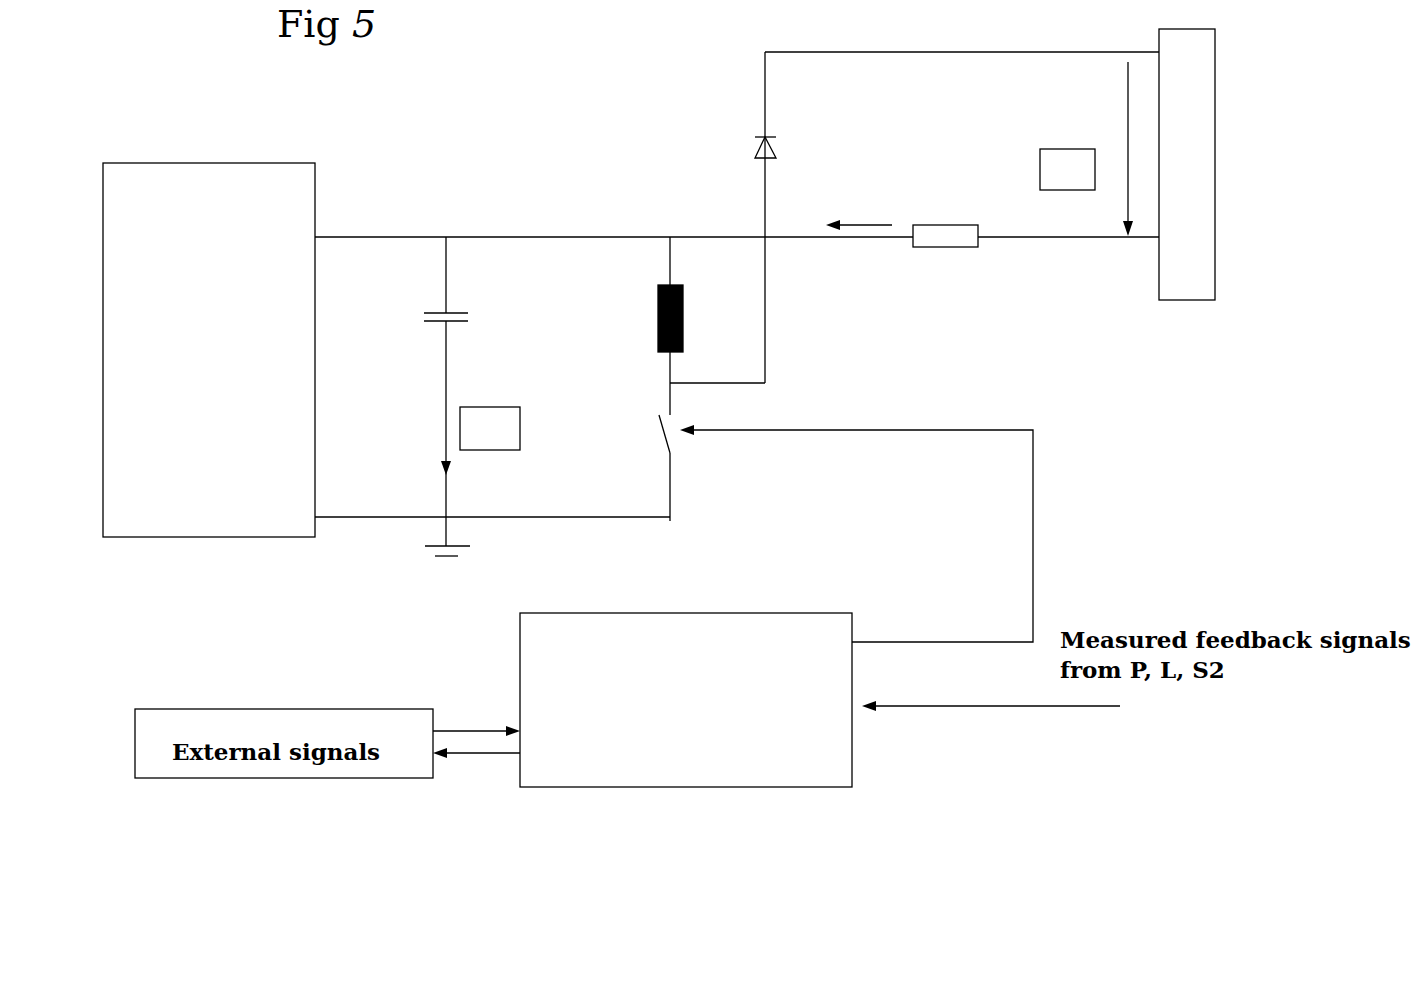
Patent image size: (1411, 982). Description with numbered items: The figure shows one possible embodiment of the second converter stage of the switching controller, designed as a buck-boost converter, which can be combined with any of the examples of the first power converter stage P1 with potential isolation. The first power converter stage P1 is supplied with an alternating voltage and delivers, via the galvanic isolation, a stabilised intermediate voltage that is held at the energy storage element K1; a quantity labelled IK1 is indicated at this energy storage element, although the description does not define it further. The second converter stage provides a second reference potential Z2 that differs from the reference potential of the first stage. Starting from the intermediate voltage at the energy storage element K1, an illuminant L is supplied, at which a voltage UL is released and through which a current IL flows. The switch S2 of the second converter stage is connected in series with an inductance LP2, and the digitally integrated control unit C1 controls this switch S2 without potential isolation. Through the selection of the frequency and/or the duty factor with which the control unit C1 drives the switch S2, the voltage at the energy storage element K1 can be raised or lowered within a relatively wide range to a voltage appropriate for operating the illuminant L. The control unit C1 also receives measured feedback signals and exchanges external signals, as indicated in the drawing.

The power converter stage P1 is at (209, 350).
The energy storage element K1 is at (419, 377).
The capacitor current measurement IK1 is at (480, 441).
The second reference potential Z2 is at (451, 568).
The inductance LP2 is at (644, 326).
The switch S2 is at (636, 467).
The current IL is at (902, 211).
The voltage UL is at (1086, 149).
The illuminant L is at (1187, 164).
The digitally integrated control unit C1 is at (686, 700).